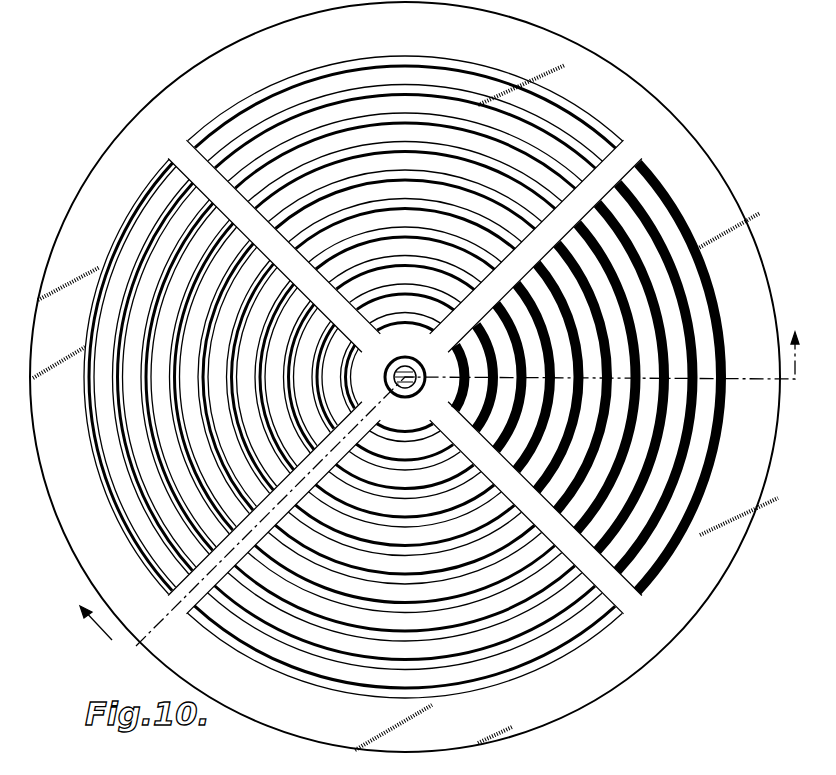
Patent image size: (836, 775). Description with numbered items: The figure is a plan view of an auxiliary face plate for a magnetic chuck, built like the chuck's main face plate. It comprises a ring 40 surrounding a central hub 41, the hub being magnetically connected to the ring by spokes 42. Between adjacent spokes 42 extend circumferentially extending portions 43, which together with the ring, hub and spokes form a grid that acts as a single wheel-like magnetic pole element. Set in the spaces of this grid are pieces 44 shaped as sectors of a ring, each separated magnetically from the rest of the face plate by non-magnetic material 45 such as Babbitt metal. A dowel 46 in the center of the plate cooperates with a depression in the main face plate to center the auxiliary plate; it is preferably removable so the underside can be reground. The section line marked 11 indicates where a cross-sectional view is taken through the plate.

The ring 40 is at (157, 112).
The hub 41 is at (416, 392).
The spokes 42 is at (213, 178).
The circumferentially extending portions 43 is at (230, 258).
The pieces in the form of a sector of a ring 44 is at (414, 127).
The non-magnetic material 45 is at (655, 428).
The dowel 46 is at (428, 358).
The section line 11- 11 is at (440, 502).